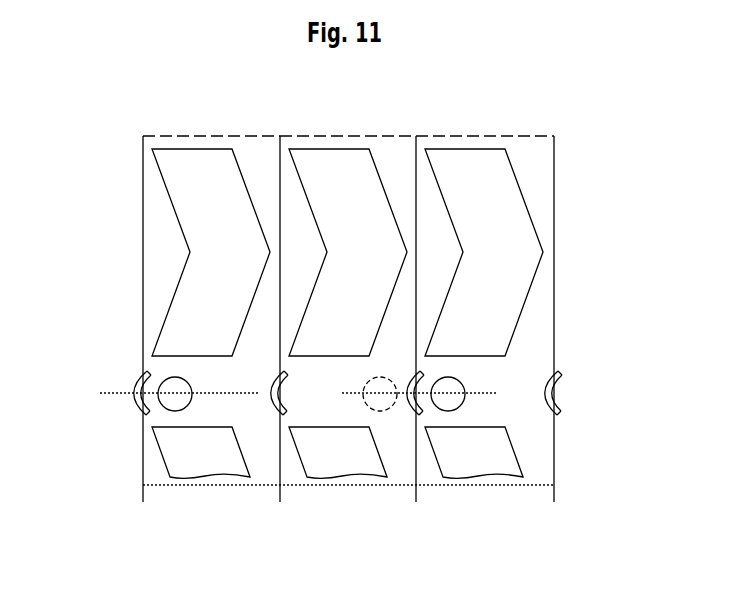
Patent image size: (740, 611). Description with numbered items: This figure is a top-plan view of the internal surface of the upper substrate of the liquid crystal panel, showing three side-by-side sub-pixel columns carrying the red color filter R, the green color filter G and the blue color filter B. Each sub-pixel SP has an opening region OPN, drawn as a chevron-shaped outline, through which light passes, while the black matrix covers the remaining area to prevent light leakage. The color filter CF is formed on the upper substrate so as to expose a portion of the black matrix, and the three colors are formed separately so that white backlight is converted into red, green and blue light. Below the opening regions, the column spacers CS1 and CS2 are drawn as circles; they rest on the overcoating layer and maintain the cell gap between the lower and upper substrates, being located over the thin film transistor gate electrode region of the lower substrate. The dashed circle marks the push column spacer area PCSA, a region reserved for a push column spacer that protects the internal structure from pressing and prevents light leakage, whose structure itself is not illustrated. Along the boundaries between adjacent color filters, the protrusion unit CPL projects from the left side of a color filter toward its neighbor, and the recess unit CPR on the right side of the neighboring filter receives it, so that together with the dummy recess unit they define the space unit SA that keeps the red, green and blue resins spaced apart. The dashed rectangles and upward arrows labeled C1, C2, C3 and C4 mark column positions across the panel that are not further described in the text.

The red color filter R is at (265, 150).
The green color filter G is at (402, 150).
The blue color filter B is at (540, 150).
The sub-pixel SP is at (522, 187).
The opening region OPN is at (520, 215).
The color filter CF is at (554, 268).
The push column spacer area PCSA is at (385, 379).
The first column spacer CS1 is at (166, 383).
The second column spacer CS2 is at (459, 384).
The protrusion unit CPL is at (136, 403).
The recess unit CPR is at (138, 412).
The space unit SA is at (273, 400).
The first column C1 is at (100, 393).
The second column C2 is at (258, 393).
The third column C3 is at (342, 393).
The fourth column C4 is at (498, 393).